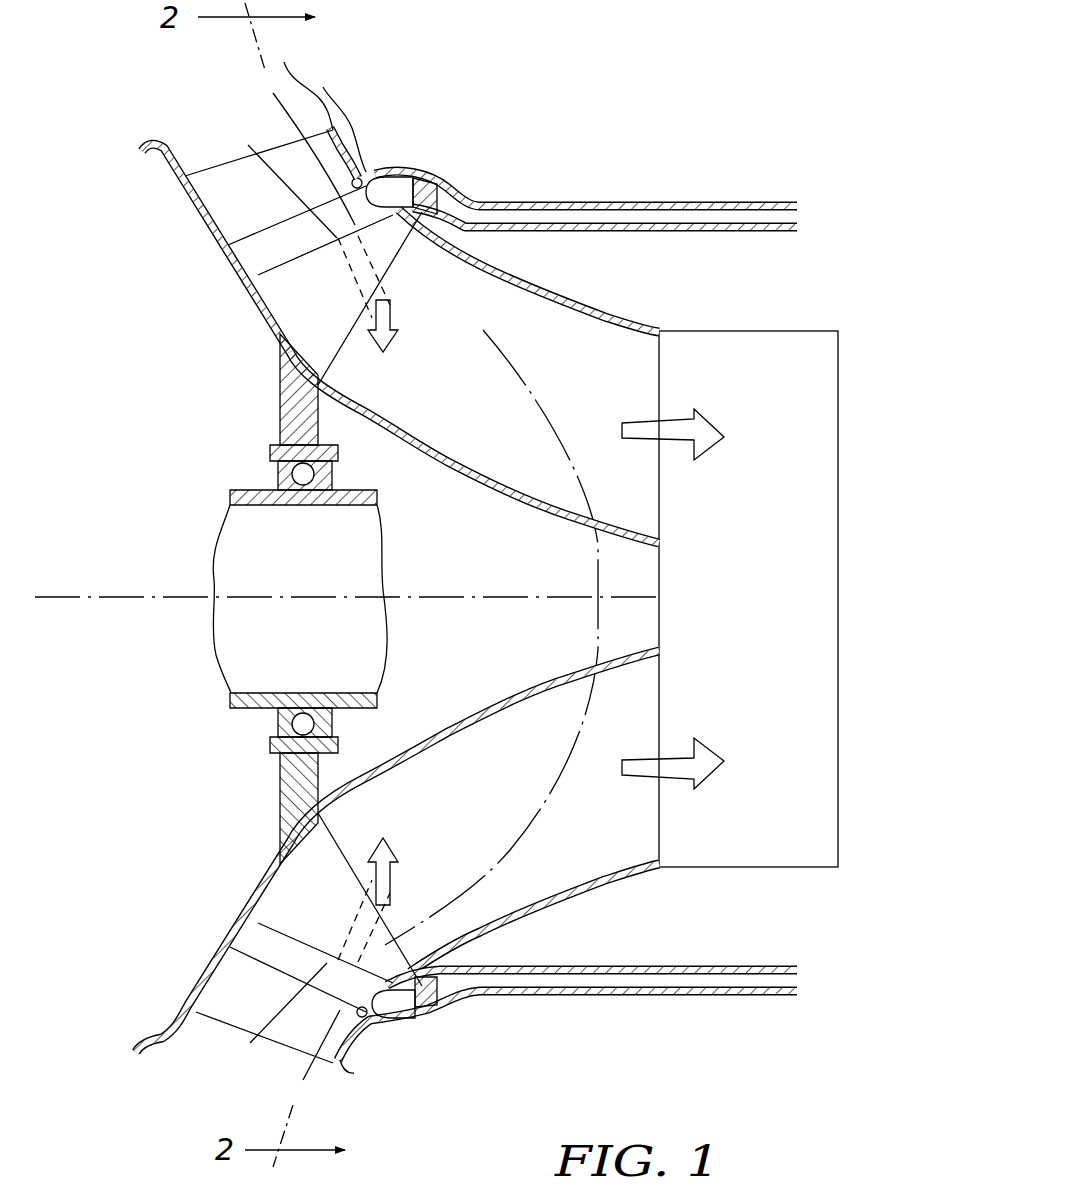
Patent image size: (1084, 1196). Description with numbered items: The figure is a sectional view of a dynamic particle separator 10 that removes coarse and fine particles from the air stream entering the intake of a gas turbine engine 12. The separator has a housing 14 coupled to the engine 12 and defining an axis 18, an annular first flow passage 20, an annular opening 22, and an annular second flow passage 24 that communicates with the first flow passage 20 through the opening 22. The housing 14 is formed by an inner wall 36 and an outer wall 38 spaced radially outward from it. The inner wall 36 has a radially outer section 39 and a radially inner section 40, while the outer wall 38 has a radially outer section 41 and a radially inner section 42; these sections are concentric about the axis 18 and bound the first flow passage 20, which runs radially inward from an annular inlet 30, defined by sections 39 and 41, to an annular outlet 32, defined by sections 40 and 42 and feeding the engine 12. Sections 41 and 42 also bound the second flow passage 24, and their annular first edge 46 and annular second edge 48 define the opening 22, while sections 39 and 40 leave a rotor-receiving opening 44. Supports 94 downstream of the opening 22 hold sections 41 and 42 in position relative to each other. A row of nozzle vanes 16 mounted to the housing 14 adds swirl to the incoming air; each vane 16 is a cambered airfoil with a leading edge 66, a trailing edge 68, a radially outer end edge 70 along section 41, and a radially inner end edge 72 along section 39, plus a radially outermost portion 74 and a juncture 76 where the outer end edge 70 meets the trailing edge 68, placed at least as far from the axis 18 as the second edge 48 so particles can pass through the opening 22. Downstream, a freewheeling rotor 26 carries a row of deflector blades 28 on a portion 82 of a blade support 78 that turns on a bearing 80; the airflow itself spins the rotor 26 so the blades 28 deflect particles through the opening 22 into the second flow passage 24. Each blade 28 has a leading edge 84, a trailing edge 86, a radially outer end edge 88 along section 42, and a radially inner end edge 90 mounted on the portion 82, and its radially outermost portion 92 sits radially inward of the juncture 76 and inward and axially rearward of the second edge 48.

The dynamic particle separator 10 is at (108, 160).
The gas turbine engine 12 is at (755, 331).
The housing 14 is at (505, 250).
The nozzle vanes 16 is at (225, 197).
The axis 18 is at (125, 597).
The annular first flow passage 20 is at (470, 443).
The annular opening 22 is at (393, 175).
The annular second flow passage 24 is at (556, 210).
The rotor 26 is at (300, 415).
The deflector blades 28 is at (283, 312).
The annular inlet 30 is at (177, 145).
The annular outlet 32 is at (637, 525).
The inner wall 36 is at (222, 284).
The outer wall 38 is at (490, 200).
The radially outer section of inner wall 39 is at (238, 293).
The radially inner section of inner wall 40 is at (512, 500).
The radially outer section of outer wall 41 is at (368, 1080).
The radially inner section of outer wall 42 is at (512, 280).
The rotor-receiving opening 44 is at (375, 416).
The annular first edge 46 is at (380, 175).
The annular second edge 48 is at (378, 1050).
The leading edge 66 is at (212, 176).
The trailing edge 68 is at (265, 243).
The radially outer end edge 70 is at (290, 75).
The radially inner end edge 72 is at (220, 250).
The radially outermost portion 74 is at (273, 93).
The juncture 76 is at (367, 176).
The blade support 78 is at (280, 395).
The bearing 80 is at (290, 480).
The portion of blade support 82 is at (297, 298).
The leading edge 84 is at (290, 280).
The trailing edge 86 is at (395, 328).
The radially outer end edge 88 is at (395, 230).
The radially inner end edge 90 is at (312, 357).
The radially outermost portion 92 is at (395, 255).
The supports 94 is at (420, 178).